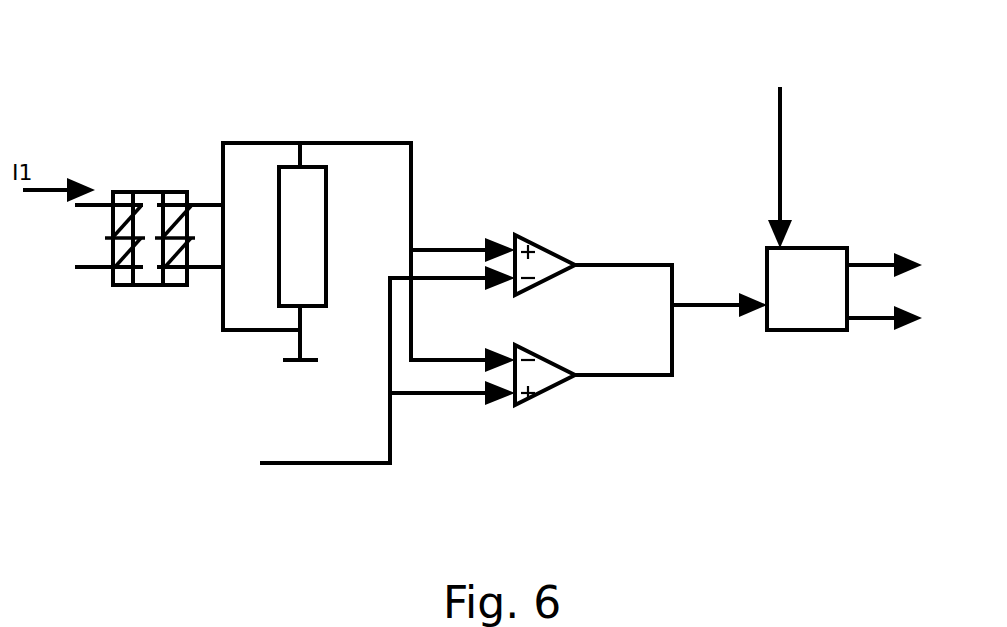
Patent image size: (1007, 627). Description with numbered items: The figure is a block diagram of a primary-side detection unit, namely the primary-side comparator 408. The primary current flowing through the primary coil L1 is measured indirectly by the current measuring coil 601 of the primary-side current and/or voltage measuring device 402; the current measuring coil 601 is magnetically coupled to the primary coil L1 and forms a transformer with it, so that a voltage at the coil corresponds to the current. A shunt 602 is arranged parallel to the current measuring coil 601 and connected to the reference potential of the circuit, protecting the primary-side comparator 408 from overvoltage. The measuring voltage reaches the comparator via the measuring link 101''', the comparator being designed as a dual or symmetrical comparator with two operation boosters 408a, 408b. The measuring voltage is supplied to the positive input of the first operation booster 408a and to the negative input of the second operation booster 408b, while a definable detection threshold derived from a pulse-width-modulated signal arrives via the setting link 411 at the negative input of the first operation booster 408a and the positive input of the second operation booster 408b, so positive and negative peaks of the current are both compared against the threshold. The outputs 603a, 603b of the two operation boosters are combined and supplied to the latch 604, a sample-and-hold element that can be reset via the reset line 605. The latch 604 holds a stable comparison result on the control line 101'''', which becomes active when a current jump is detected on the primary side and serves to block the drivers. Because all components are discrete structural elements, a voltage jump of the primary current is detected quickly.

The primary-side current and/or voltage measuring device 402 is at (145, 249).
The primary coil L1 is at (113, 285).
The current measuring coil 601 is at (175, 285).
The measuring link 101''' is at (369, 211).
The shunt 602 is at (328, 247).
The setting link 411 is at (303, 455).
The primary-side comparator 408 is at (590, 234).
The first operation booster 408a is at (560, 226).
The second operation booster 408b is at (545, 392).
The output of the first operation booster 603a is at (623, 270).
The output of the second operation booster 603b is at (588, 370).
The latch 604 is at (818, 333).
The reset line 605 is at (783, 168).
The control line 101'''' is at (866, 345).